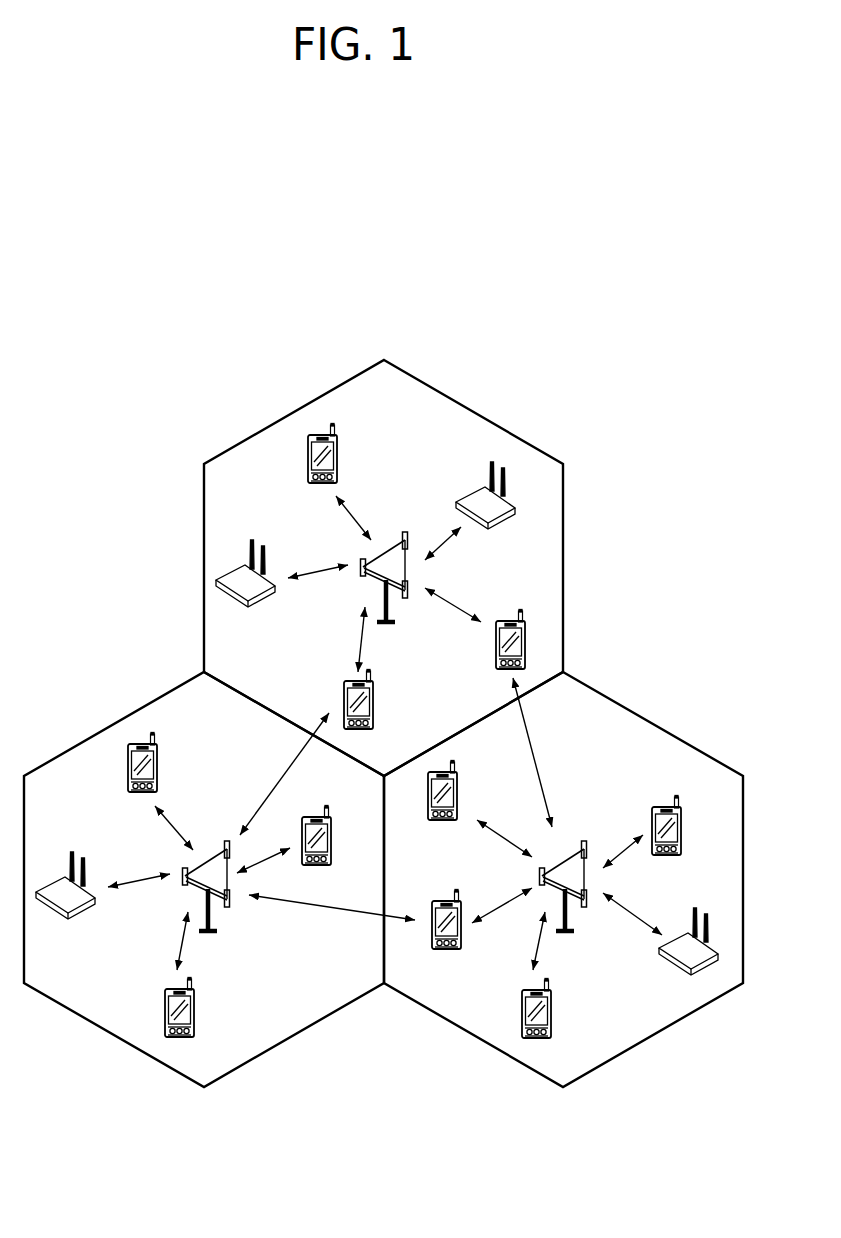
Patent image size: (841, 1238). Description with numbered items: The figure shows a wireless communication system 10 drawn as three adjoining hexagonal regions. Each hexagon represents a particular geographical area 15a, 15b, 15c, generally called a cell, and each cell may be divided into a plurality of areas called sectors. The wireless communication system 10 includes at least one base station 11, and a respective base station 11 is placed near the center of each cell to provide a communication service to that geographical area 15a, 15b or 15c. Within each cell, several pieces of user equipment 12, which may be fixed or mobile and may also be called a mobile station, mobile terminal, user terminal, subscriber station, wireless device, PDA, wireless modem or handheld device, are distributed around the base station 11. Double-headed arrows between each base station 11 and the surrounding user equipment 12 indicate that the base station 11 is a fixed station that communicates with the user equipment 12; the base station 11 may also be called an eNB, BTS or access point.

The wireless communication system 10 is at (641, 468).
The base station 11 is at (395, 540).
The user equipment 12 is at (337, 458).
The geographical area 15a is at (564, 556).
The geographical area 15b is at (672, 732).
The geographical area 15c is at (90, 733).